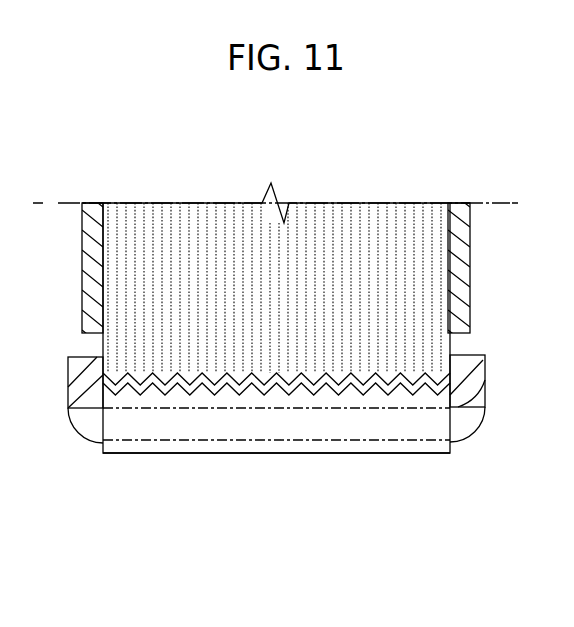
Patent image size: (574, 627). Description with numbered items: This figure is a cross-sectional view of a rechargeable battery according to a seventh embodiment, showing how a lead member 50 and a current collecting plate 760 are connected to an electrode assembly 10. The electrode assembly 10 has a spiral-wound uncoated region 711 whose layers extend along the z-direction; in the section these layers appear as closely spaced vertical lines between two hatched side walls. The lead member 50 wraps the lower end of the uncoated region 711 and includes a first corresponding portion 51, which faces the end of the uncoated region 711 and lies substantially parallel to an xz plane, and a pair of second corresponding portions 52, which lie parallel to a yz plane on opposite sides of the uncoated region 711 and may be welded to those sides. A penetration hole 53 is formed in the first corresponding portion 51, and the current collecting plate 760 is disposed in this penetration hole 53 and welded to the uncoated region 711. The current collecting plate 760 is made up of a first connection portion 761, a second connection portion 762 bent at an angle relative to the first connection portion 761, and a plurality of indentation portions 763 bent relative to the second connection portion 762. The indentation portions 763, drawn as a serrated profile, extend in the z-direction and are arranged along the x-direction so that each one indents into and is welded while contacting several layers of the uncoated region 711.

The electrode assembly 10 is at (404, 203).
The uncoated region 711 is at (417, 293).
The current collecting plate 760 is at (276, 478).
The first connection portion 761 is at (163, 545).
The second connection portion 762 is at (238, 395).
The indentation portion 763 is at (203, 396).
The lead member 50 is at (307, 469).
The first corresponding portion 51 is at (433, 441).
The second corresponding portion 52 is at (485, 381).
The penetration hole 53 is at (445, 422).